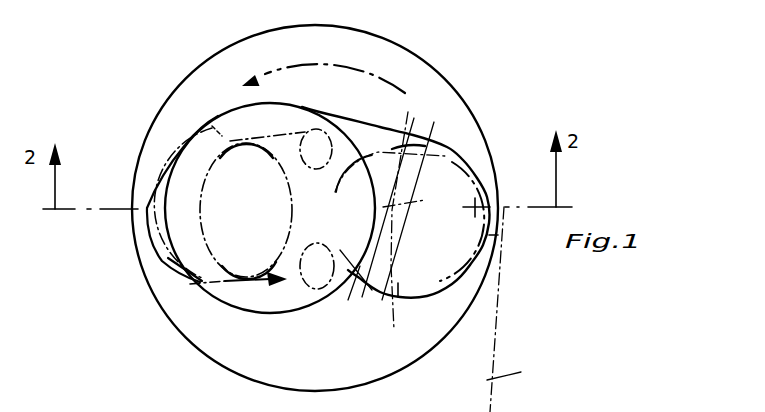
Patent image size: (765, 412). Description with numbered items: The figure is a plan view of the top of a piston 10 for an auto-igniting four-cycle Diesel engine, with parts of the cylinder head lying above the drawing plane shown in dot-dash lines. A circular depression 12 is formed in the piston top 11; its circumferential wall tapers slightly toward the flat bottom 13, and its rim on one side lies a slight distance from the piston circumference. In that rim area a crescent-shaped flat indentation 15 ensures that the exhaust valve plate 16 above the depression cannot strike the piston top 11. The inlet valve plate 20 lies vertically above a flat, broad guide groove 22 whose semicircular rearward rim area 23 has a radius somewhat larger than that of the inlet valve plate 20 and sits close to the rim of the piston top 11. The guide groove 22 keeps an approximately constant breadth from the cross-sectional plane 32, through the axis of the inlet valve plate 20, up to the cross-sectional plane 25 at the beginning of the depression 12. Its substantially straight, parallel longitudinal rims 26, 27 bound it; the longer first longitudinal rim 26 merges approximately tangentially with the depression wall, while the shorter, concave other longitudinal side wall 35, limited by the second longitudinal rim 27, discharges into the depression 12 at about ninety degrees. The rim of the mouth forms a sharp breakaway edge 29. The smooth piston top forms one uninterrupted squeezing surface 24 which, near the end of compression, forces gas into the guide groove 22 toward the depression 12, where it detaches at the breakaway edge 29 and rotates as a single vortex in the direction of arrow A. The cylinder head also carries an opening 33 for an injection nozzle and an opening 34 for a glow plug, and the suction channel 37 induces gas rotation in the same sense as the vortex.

The piston 10 is at (452, 76).
The piston top 11 is at (459, 116).
The circular depression 12 is at (295, 311).
The bottom 13 is at (203, 346).
The crescent-shaped flat indentation 15 is at (157, 216).
The exhaust valve plate 16 is at (222, 118).
The inlet valve plate 20 is at (396, 300).
The guide groove 22 is at (433, 150).
The semicircular rearward rim area 23 is at (493, 237).
The squeezing surface 24 is at (430, 323).
The cross-sectional plane 25 is at (429, 201).
The first longitudinal rim 26 is at (376, 125).
The second longitudinal rim 27 is at (346, 268).
The breakaway edge 29 is at (340, 193).
The cross-sectional plane 32 is at (395, 202).
The opening for an injection nozzle 33 is at (311, 247).
The opening for a glow plug 34 is at (325, 133).
The other longitudinal side wall 35 is at (358, 288).
The suction channel 37 is at (521, 358).
The arrow A is at (203, 205).